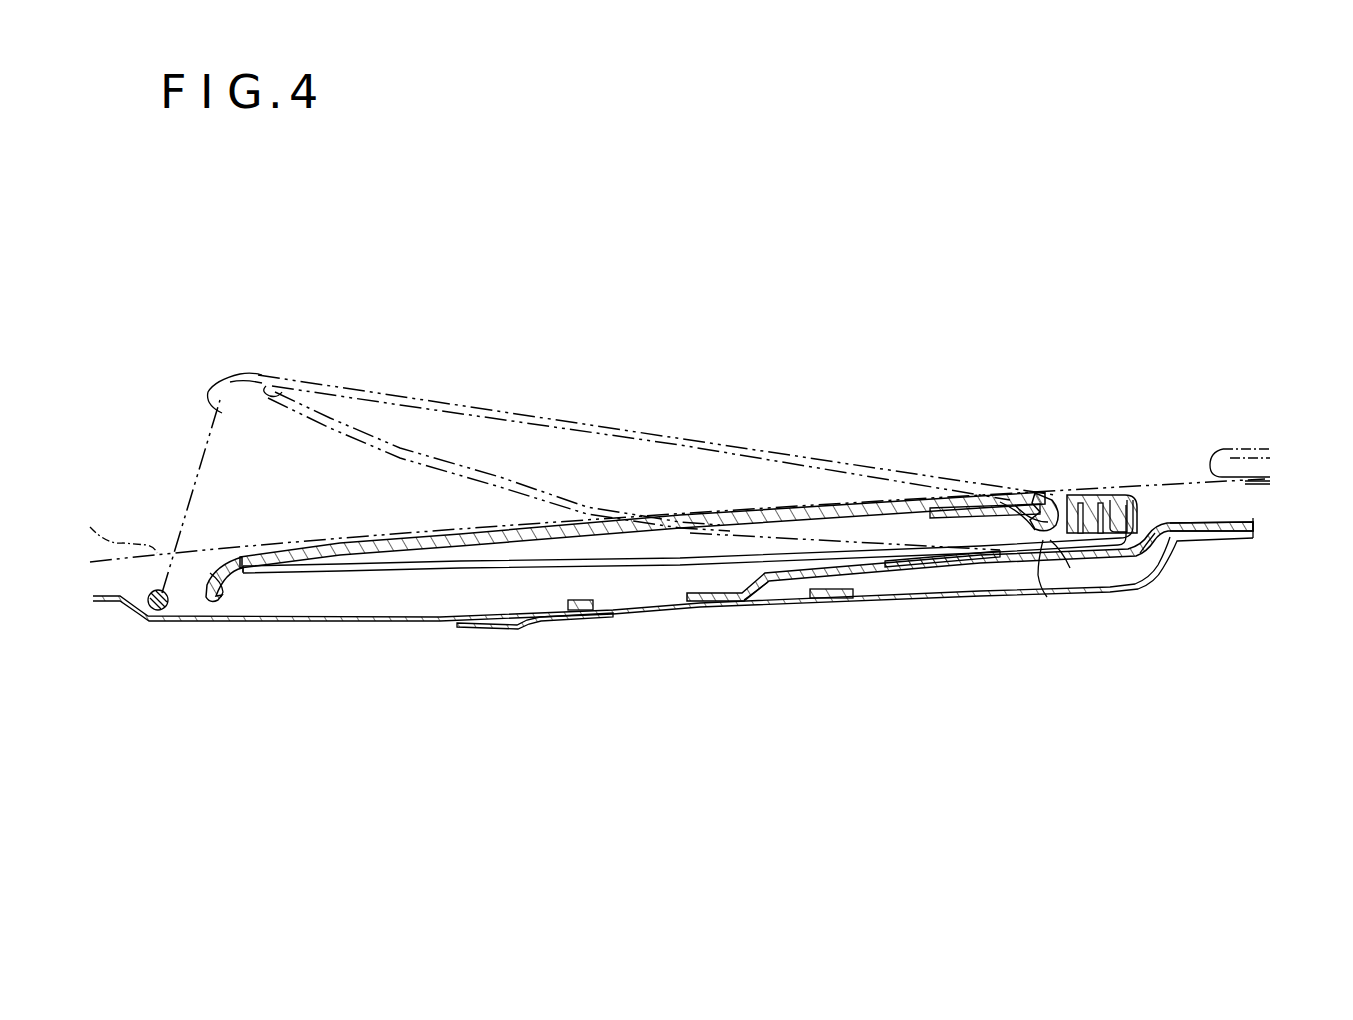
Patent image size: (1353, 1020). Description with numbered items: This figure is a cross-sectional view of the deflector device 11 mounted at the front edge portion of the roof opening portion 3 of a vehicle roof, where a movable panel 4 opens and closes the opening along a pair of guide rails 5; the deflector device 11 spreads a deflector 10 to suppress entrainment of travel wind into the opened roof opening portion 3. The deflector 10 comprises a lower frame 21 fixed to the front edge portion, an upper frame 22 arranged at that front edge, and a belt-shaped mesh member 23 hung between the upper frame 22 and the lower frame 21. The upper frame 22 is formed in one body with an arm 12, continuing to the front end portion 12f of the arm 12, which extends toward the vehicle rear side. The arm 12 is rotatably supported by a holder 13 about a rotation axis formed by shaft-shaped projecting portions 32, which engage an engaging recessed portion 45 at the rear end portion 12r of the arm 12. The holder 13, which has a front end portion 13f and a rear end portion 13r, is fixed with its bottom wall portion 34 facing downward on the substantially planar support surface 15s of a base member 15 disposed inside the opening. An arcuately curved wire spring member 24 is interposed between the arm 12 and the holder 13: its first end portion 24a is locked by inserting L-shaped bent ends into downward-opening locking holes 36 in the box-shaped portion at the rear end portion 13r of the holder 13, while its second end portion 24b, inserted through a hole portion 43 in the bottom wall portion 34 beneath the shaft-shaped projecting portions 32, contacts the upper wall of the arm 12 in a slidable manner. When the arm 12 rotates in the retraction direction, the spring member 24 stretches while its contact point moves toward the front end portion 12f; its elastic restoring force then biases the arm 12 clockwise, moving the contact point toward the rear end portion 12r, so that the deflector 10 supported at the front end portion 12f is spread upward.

The roof opening portion 3 is at (119, 529).
The movable panel 4 is at (1222, 448).
The guide rails 5 is at (322, 623).
The deflector 10 is at (128, 418).
The deflector device 11 is at (905, 238).
The arm 12 is at (330, 538).
The front end portion of the arm 12f is at (240, 555).
The rear end portion of the arm 12r is at (1053, 494).
The holder 13 is at (1093, 492).
The front end portion of the holder 13f is at (860, 570).
The rear end portion of the holder 13r is at (1177, 551).
The base member 15 is at (1163, 576).
The support surface 15s is at (797, 567).
The lower frame 21 is at (146, 595).
The upper frame 22 is at (213, 571).
The mesh member 23 is at (190, 495).
The spring member 24 is at (457, 574).
The first end portion of the spring member 24a is at (1137, 520).
The second end portion of the spring member 24b is at (246, 574).
The shaft-shaped projecting portions 32 is at (1070, 568).
The bottom wall portion 34 is at (973, 565).
The locking holes 36 is at (1133, 490).
The hole portion 43 is at (1040, 590).
The engaging recessed portion 45 is at (1040, 490).